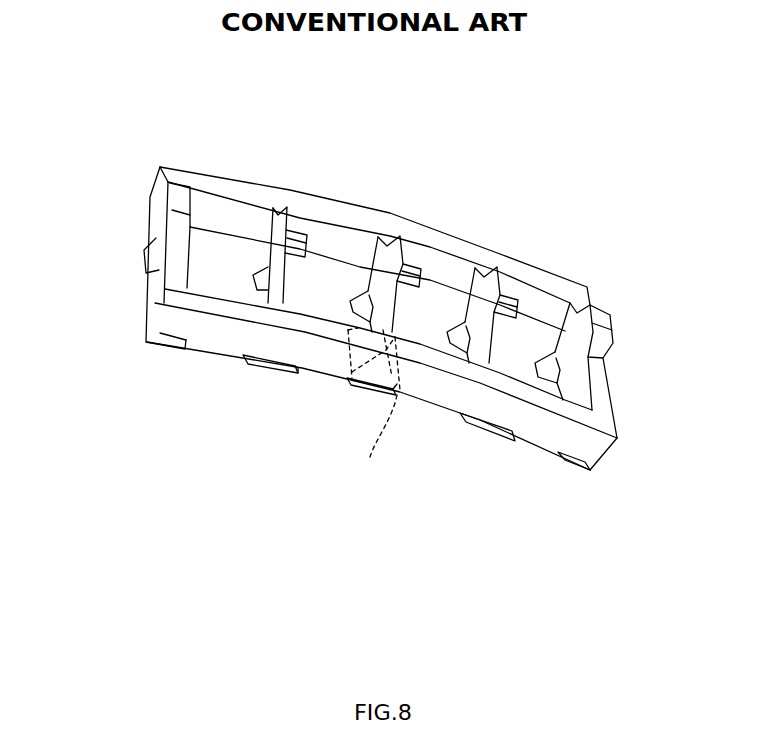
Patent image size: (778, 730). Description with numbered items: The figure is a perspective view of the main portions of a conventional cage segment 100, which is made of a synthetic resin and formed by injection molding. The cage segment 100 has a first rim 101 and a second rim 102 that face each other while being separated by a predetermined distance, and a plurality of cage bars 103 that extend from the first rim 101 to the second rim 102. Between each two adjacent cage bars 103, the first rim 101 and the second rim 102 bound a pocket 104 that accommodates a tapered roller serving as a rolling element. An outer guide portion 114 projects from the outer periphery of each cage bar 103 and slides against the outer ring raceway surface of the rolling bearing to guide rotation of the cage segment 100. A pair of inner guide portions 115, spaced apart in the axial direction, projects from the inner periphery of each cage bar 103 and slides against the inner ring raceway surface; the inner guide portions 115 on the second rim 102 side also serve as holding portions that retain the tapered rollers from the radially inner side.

The cage segment 100 is at (481, 216).
The first rim 101 is at (217, 183).
The second rim 102 is at (217, 337).
The cage bar 103 is at (173, 255).
The pocket 104 is at (333, 273).
The outer guide portion 114 is at (295, 226).
The inner guide portion 115 is at (262, 268).